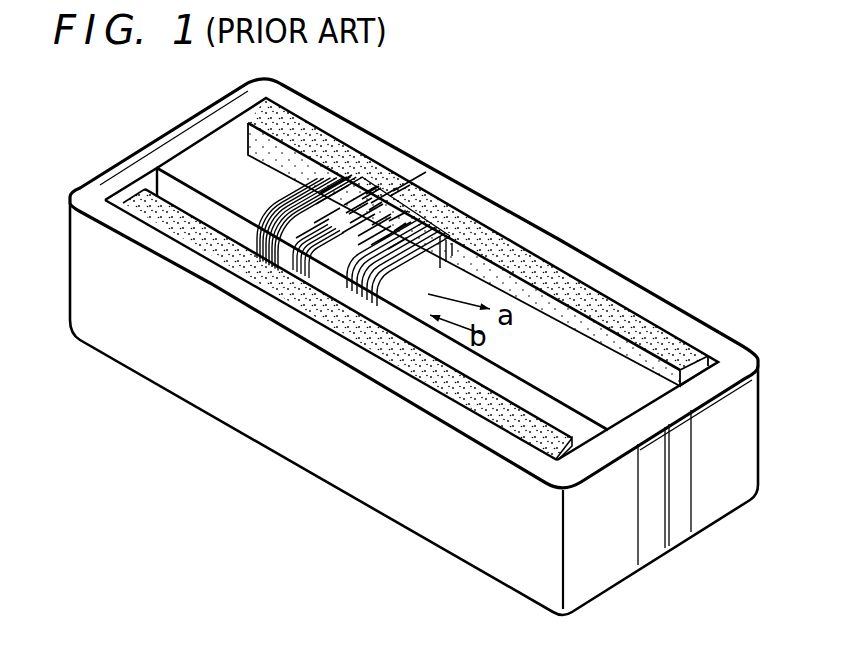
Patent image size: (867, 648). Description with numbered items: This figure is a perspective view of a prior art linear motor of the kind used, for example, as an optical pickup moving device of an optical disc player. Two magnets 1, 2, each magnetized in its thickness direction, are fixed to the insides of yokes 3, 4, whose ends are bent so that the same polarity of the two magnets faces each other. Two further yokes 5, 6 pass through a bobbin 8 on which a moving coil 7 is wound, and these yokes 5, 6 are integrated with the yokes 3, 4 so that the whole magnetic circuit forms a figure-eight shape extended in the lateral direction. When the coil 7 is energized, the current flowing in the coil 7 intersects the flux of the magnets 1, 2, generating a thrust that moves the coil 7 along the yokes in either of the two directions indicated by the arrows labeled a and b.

The magnet 1 is at (248, 268).
The magnet 2 is at (323, 150).
The yoke 3 is at (345, 360).
The yoke 4 is at (470, 200).
The yoke 5 is at (150, 147).
The yoke 6 is at (177, 127).
The moving coil 7 is at (385, 200).
The bobbin 8 is at (473, 222).